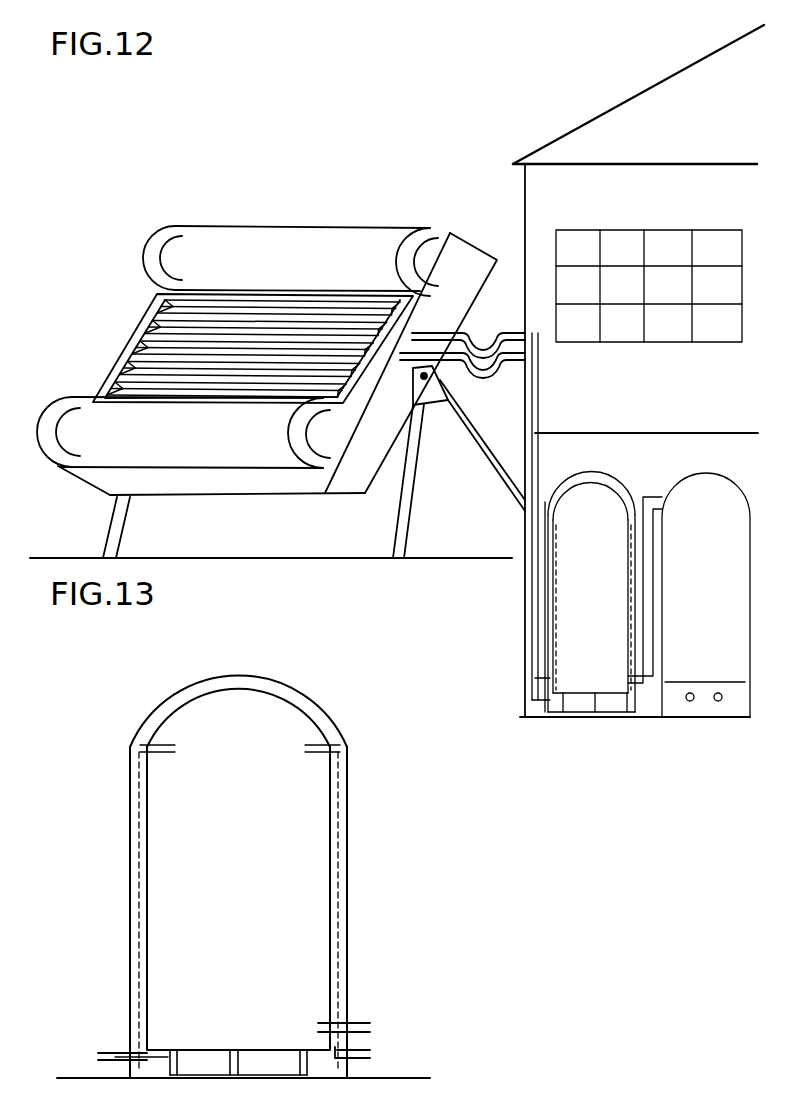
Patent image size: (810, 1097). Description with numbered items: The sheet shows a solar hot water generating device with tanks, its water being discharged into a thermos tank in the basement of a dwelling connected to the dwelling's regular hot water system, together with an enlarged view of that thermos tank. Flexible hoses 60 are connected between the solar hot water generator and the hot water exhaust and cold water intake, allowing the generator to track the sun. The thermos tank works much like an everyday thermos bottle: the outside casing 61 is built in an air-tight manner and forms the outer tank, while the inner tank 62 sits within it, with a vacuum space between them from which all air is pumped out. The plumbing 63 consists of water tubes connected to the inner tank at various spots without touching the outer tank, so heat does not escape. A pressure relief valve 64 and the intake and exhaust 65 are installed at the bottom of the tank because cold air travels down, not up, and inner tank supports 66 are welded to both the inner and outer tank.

In FIG. 12, the flexible hoses 60 is at (487, 346).
In FIG. 13, the outside casing 61 is at (147, 722).
In FIG. 13, the inner tank 62 is at (237, 693).
In FIG. 13, the plumbing 63 is at (140, 768).
In FIG. 13, the pressure relief valve 64 is at (367, 1022).
In FIG. 13, the intake and exhaust 65 is at (108, 1046).
In FIG. 13, the inner tank supports 66 is at (168, 1057).